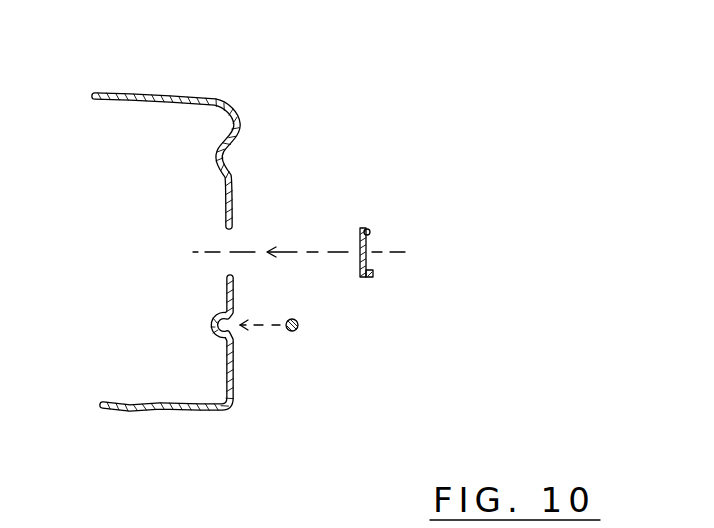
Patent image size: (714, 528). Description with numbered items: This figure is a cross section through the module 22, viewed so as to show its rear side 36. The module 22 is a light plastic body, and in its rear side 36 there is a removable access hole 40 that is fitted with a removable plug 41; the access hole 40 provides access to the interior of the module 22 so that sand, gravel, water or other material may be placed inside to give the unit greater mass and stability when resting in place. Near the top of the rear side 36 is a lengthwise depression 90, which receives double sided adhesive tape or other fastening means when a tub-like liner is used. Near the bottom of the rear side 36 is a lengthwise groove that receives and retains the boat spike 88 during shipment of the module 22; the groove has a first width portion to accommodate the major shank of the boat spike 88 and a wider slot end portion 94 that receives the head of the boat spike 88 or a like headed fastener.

The module 22 is at (238, 83).
The lengthwise depression 90 is at (230, 163).
The access hole 40 is at (231, 230).
The removable plug 41 is at (370, 243).
The rear side 36 is at (242, 373).
The boat spike 88 is at (296, 330).
The slot end portion 94 is at (240, 337).